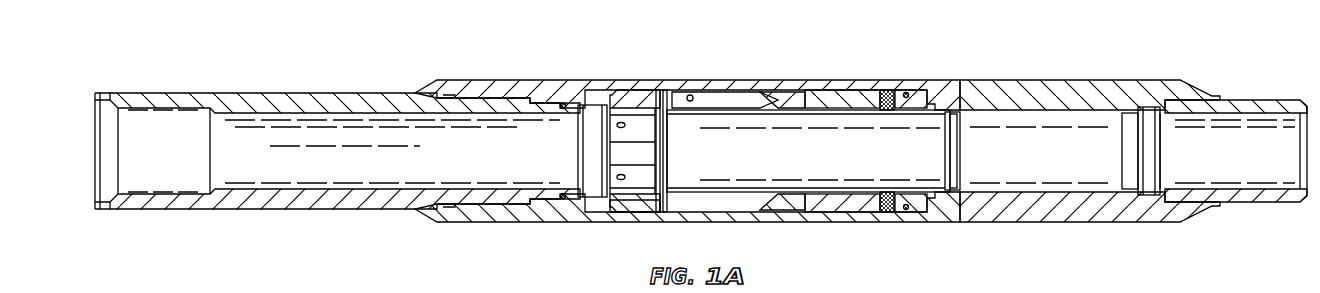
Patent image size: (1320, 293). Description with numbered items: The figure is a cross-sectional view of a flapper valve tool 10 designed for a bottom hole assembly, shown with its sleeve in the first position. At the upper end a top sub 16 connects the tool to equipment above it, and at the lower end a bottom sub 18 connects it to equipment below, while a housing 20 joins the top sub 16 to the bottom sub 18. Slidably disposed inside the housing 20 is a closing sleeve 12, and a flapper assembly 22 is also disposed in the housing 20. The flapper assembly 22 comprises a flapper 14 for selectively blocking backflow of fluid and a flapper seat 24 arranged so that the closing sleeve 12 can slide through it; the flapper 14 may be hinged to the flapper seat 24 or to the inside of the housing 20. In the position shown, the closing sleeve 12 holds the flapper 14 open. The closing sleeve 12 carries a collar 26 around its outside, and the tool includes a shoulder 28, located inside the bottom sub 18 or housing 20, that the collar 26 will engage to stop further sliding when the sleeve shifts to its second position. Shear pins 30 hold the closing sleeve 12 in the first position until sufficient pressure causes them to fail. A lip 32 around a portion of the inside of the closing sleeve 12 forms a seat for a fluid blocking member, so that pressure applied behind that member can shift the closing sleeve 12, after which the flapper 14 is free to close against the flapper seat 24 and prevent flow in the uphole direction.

The flapper valve tool 10 is at (1062, 17).
The closing sleeve 12 is at (752, 135).
The flapper 14 is at (700, 100).
The top sub 16 is at (254, 92).
The bottom sub 18 is at (1205, 95).
The housing 20 is at (570, 88).
The flapper assembly 22 is at (648, 80).
The flapper seat 24 is at (660, 212).
The collar 26 is at (895, 100).
The shoulder 28 is at (1110, 113).
The shear pins 30 is at (885, 100).
The lip 32 is at (945, 120).